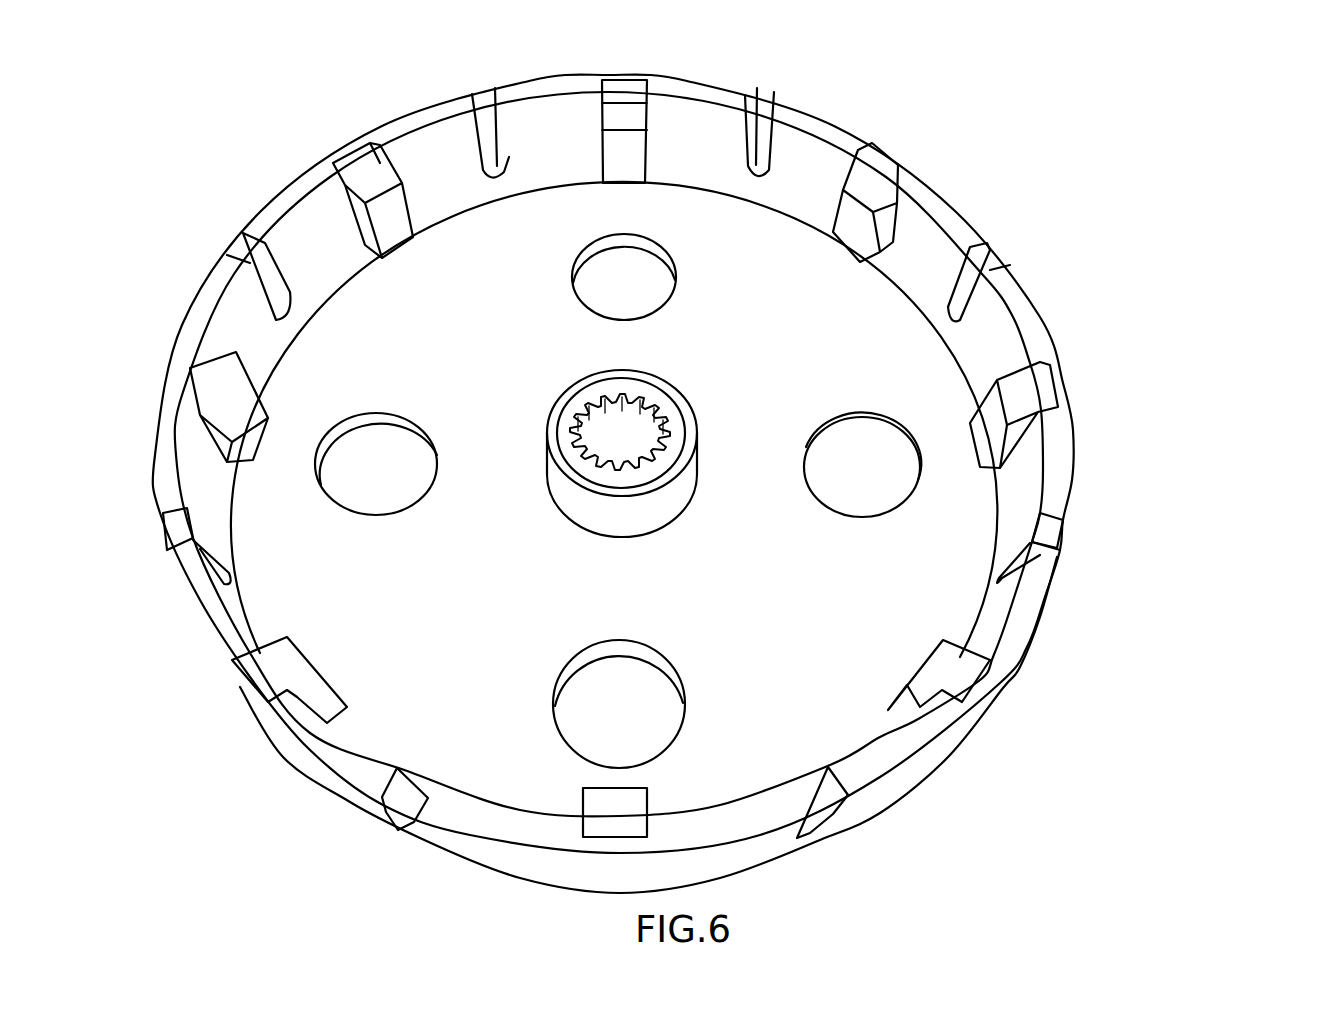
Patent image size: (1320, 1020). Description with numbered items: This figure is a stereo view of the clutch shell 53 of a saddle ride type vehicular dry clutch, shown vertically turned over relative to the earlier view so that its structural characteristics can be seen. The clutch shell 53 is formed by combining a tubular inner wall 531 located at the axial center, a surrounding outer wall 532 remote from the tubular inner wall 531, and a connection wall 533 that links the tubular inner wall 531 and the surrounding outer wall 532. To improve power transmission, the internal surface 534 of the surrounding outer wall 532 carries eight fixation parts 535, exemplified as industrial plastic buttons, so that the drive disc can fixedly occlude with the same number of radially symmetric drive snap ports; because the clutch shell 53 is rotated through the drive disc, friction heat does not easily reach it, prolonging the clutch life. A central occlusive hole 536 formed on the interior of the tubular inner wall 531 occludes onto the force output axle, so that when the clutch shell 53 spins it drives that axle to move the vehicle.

The clutch shell 53 is at (175, 212).
The tubular inner wall 531 is at (648, 512).
The surrounding outer wall 532 is at (1208, 276).
The connection wall 533 is at (730, 600).
The internal surface 534 is at (1005, 313).
The fixation part 535 is at (1033, 397).
The central occlusive hole 536 is at (660, 440).